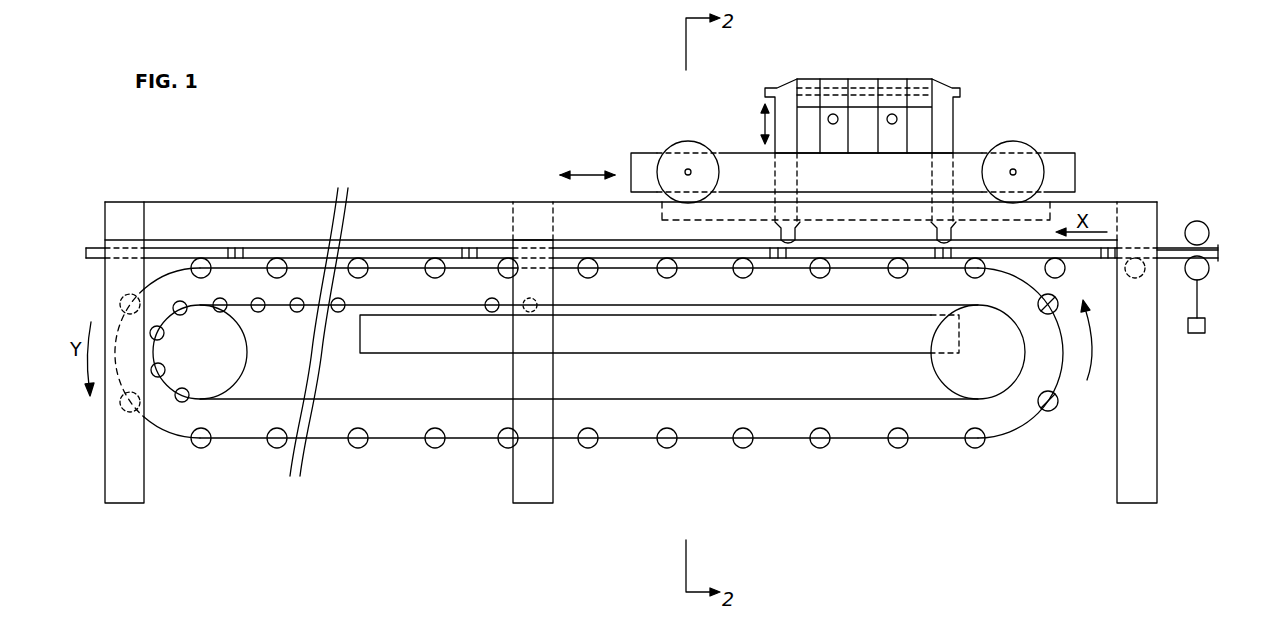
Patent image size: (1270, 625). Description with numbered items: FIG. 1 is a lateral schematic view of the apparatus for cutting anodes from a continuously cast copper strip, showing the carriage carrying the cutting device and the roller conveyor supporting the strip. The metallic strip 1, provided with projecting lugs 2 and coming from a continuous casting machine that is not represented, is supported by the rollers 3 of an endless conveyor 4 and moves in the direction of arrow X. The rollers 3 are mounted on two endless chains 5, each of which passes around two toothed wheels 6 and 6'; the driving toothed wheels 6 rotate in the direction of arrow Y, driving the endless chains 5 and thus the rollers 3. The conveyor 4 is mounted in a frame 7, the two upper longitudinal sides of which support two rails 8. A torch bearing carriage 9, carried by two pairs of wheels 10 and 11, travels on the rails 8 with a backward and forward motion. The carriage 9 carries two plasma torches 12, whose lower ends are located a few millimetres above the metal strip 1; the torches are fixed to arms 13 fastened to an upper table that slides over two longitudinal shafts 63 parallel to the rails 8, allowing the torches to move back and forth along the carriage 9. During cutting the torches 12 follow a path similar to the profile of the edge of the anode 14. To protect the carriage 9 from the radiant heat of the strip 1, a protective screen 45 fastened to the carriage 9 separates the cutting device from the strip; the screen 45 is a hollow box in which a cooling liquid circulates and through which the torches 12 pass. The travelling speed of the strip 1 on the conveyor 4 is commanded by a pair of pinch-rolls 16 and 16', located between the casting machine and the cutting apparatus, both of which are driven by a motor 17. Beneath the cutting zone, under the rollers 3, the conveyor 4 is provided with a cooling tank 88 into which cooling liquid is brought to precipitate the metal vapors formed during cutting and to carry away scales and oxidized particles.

The metallic strip 1 is at (1176, 226).
The projecting lugs 2 is at (236, 248).
The rollers 3 is at (745, 277).
The endless conveyor 4 is at (360, 384).
The endless chains 5 is at (259, 312).
The driving toothed wheel 6 is at (565, 352).
The toothed wheel 6' is at (960, 352).
The frame 7 is at (128, 488).
The rails 8 is at (1101, 210).
The torch bearing carriage 9 is at (742, 173).
The wheels 10 is at (678, 146).
The wheels 11 is at (1031, 156).
The plasma torches 12 is at (779, 232).
The arms 13 is at (942, 122).
The anode 14 is at (279, 248).
The pinch-roll 16 is at (1215, 220).
The pinch-roll 16' is at (1221, 270).
The motor 17 is at (1205, 326).
The protective screen 45 is at (660, 221).
The longitudinal shafts 63 is at (920, 88).
The cooling tank 88 is at (440, 353).